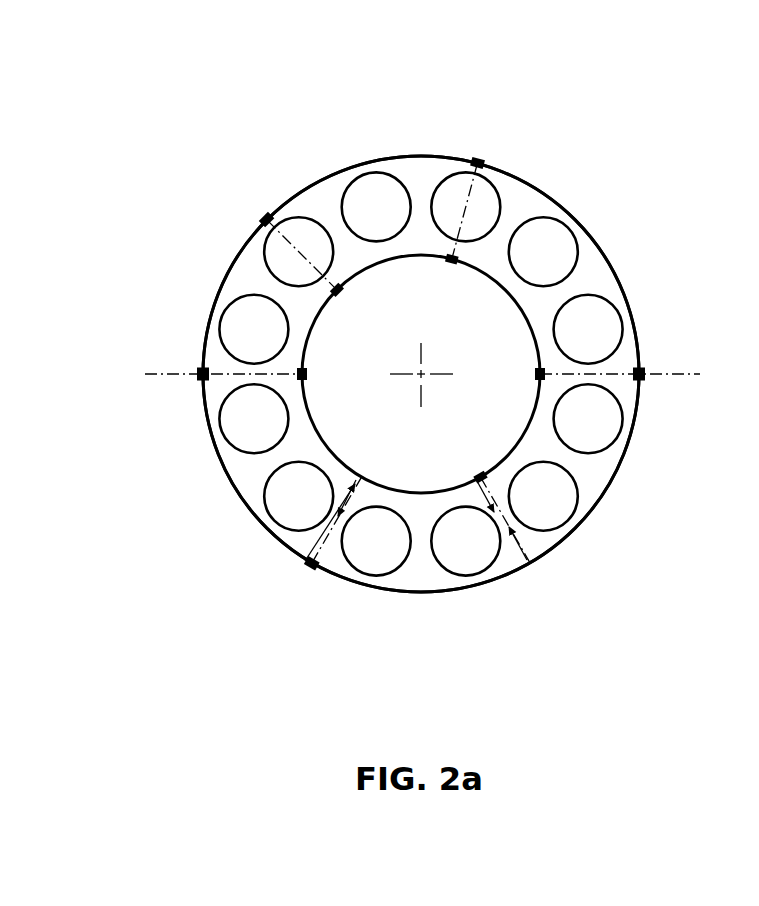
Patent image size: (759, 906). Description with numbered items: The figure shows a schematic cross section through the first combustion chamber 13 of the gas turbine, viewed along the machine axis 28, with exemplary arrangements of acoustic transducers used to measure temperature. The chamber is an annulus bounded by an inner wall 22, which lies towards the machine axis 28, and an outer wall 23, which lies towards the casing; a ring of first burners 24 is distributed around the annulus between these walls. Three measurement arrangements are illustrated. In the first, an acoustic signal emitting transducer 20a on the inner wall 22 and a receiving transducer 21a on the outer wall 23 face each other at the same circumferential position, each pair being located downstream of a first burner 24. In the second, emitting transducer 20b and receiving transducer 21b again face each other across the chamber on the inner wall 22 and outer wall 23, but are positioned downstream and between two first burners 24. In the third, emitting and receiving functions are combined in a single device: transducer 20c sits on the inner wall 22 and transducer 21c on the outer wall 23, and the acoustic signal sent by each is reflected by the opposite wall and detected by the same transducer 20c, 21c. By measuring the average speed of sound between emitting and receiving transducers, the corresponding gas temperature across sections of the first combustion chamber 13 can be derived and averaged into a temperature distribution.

The first combustion chamber 13 is at (524, 161).
The acoustic signal emitting transducer 20a is at (449, 270).
The acoustic signal emitting transducer 20b is at (309, 374).
The combined emitting and receiving transducer 20c is at (475, 469).
The receiving transducer 21a is at (480, 156).
The receiving transducer 21b is at (420, 375).
The combined emitting and receiving transducer 21c is at (307, 570).
The inner wall 22 is at (312, 331).
The outer wall 23 is at (225, 481).
The first burner 24 is at (588, 422).
The machine axis 28 is at (424, 371).